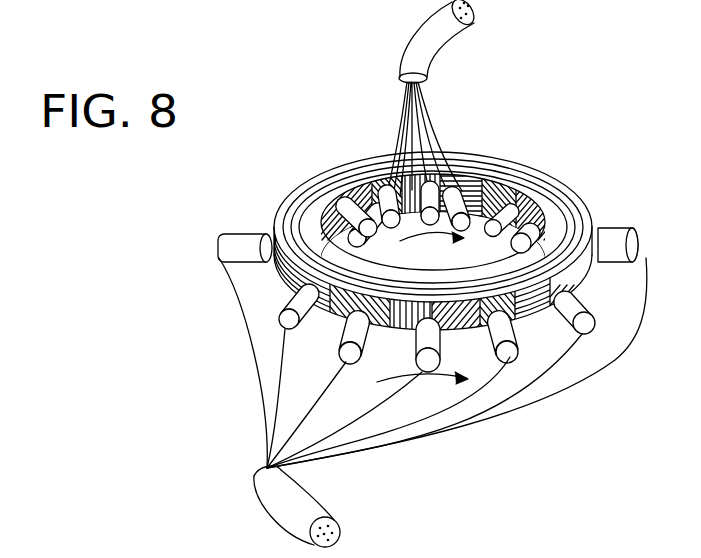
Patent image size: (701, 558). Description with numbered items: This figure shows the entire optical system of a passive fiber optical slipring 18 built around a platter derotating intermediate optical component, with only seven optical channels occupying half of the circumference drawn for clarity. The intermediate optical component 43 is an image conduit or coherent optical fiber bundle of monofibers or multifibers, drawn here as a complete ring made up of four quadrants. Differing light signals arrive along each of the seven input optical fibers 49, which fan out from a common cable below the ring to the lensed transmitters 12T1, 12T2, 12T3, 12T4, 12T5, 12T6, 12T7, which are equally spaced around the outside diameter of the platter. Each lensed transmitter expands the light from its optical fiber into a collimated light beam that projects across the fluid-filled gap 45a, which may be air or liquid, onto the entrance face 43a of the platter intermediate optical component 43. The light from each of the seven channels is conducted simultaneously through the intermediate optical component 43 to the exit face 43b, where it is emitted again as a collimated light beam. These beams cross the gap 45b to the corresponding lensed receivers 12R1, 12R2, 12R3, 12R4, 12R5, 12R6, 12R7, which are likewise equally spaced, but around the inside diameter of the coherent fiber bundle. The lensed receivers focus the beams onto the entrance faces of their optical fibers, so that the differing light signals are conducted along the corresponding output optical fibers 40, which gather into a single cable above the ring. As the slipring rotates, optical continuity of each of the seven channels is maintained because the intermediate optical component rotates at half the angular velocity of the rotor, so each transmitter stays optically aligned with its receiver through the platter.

The passive fiber optical slipring 18 is at (333, 109).
The output optical fibers 40 is at (425, 84).
The intermediate optical component 43 is at (439, 237).
The entrance face 43a is at (291, 285).
The exit face 43b is at (312, 178).
The gap 45a is at (386, 222).
The gap 45b is at (363, 166).
The input optical fibers 49 is at (266, 466).
The lensed receiver 12R1 is at (374, 250).
The lensed receiver 12R2 is at (338, 182).
The lensed receiver 12R3 is at (395, 180).
The lensed receiver 12R4 is at (446, 182).
The lensed receiver 12R5 is at (483, 190).
The lensed receiver 12R6 is at (515, 205).
The lensed receiver 12R7 is at (532, 233).
The lensed transmitter 12T1 is at (250, 243).
The lensed transmitter 12T2 is at (300, 318).
The lensed transmitter 12T3 is at (359, 352).
The lensed transmitter 12T4 is at (438, 346).
The lensed transmitter 12T5 is at (515, 358).
The lensed transmitter 12T6 is at (579, 316).
The lensed transmitter 12T7 is at (632, 230).